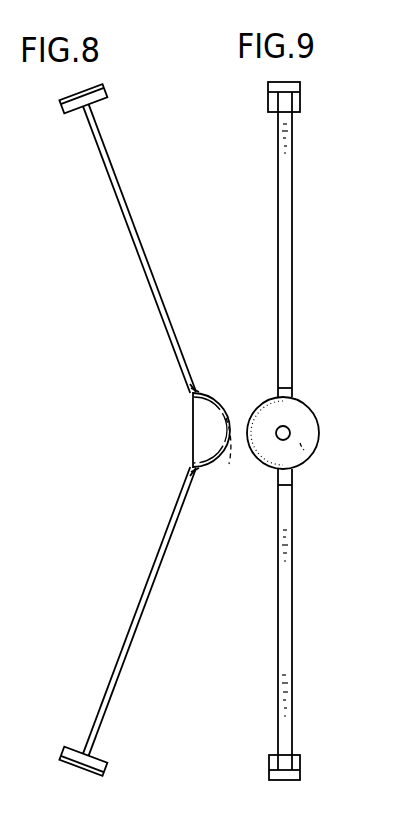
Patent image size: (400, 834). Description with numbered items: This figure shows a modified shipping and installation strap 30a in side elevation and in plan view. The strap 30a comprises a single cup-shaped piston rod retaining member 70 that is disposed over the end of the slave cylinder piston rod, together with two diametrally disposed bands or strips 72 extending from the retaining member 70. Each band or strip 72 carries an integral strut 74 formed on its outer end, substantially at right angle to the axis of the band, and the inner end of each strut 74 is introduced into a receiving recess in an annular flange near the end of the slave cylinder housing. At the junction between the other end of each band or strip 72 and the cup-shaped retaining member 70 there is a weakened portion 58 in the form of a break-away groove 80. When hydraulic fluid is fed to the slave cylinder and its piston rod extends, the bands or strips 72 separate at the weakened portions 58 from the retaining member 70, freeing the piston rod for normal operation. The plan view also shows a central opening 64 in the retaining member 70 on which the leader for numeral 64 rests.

In FIG. 8, the shipping and installation strap 30a is at (130, 444).
In FIG. 9, the shipping and installation strap 30a is at (284, 452).
In FIG. 8, the band 72 is at (116, 165).
In FIG. 9, the band 72 is at (280, 193).
In FIG. 8, the strut 74 is at (69, 114).
In FIG. 9, the strut 74 is at (268, 98).
In FIG. 8, the cup-shaped piston rod retaining member 70 is at (198, 438).
In FIG. 9, the cup-shaped piston rod retaining member 70 is at (307, 453).
In FIG. 8, the central hole 64 is at (201, 475).
In FIG. 9, the central hole 64 is at (289, 428).
In FIG. 8, the weakened portion 58 is at (196, 374).
In FIG. 9, the weakened portion 58 is at (282, 383).
In FIG. 8, the break-away groove 80 is at (194, 383).
In FIG. 9, the break-away groove 80 is at (292, 383).